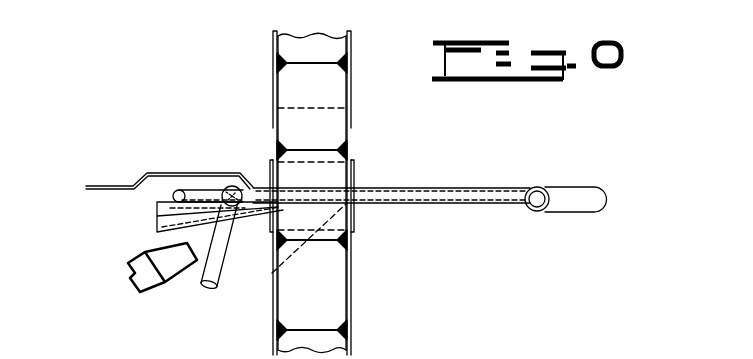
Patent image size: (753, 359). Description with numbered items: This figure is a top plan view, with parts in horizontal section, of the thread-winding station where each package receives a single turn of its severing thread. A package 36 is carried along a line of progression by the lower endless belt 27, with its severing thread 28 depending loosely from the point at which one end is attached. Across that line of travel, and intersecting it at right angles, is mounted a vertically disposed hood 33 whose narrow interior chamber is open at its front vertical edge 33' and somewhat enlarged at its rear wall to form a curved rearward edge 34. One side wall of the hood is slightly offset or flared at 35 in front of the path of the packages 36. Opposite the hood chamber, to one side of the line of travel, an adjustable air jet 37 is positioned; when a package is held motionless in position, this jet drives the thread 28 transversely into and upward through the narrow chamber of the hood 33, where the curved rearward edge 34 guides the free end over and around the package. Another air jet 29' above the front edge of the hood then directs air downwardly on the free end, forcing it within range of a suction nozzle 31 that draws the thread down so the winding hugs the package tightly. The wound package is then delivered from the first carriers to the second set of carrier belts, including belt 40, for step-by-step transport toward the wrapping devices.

The endless belt 27 is at (277, 331).
The severing thread 28 is at (302, 108).
The air jet 29' is at (228, 246).
The suction nozzle 31 is at (176, 192).
The hood 33 is at (391, 179).
The front vertical edge 33' is at (240, 174).
The curved rearward edge 34 is at (588, 187).
The flared side wall portion 35 is at (158, 221).
The package 36 is at (347, 152).
The air jet 37 is at (168, 272).
The carrier belt 40 is at (280, 63).